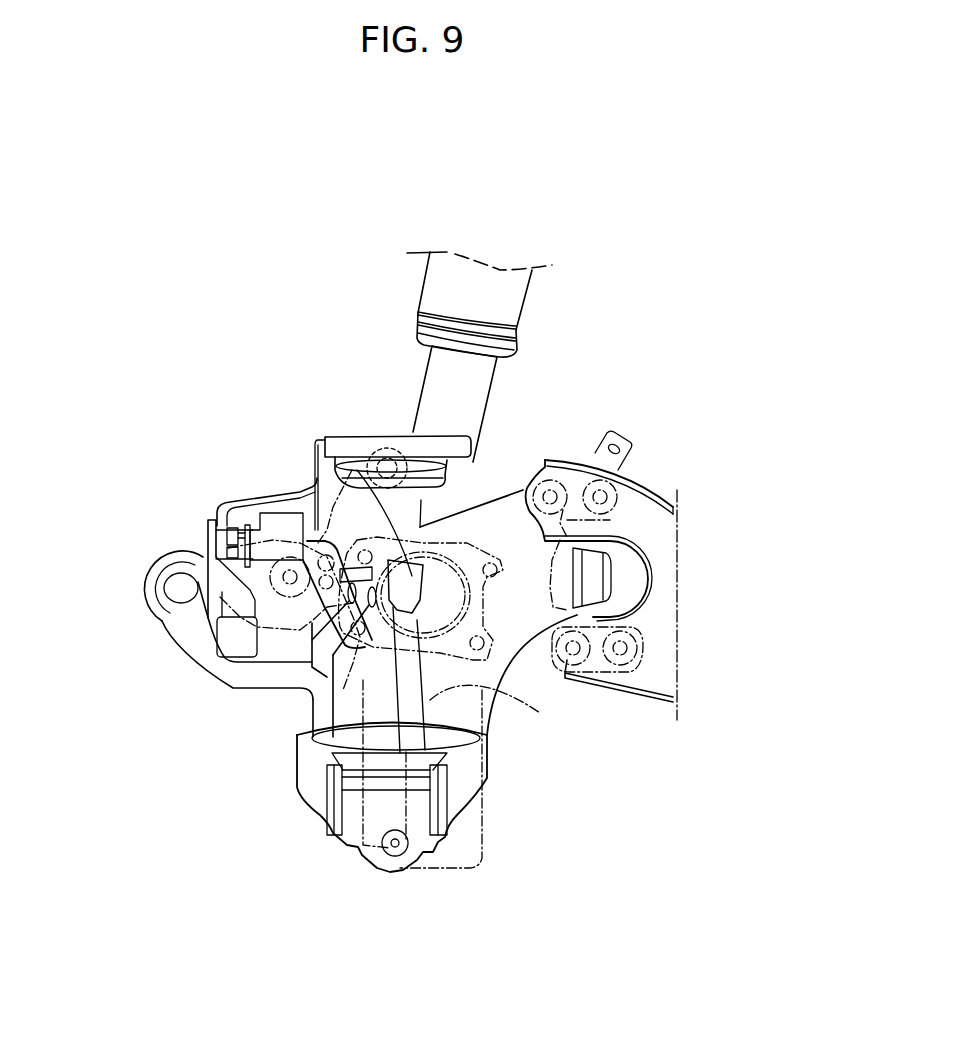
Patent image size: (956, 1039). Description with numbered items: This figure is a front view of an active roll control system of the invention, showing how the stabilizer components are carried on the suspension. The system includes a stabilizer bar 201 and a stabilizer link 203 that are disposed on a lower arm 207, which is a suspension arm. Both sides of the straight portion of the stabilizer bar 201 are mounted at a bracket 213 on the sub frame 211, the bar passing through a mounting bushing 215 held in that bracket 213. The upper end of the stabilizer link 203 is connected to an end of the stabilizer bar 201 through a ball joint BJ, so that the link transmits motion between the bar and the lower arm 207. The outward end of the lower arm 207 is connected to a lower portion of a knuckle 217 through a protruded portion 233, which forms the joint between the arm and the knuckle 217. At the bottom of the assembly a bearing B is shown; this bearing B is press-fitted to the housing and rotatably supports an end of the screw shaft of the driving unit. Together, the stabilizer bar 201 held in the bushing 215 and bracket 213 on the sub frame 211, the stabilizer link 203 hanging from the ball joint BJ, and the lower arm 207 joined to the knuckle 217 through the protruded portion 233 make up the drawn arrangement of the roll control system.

The stabilizer bar 201 is at (187, 622).
The stabilizer link 203 is at (410, 672).
The lower arm 207 is at (467, 770).
The sub frame 211 is at (637, 510).
The bracket 213 is at (222, 597).
The mounting bushing 215 is at (153, 565).
The knuckle 217 is at (475, 690).
The protruded portion 233 is at (433, 812).
The bearing B is at (395, 857).
The ball joint BJ is at (357, 470).